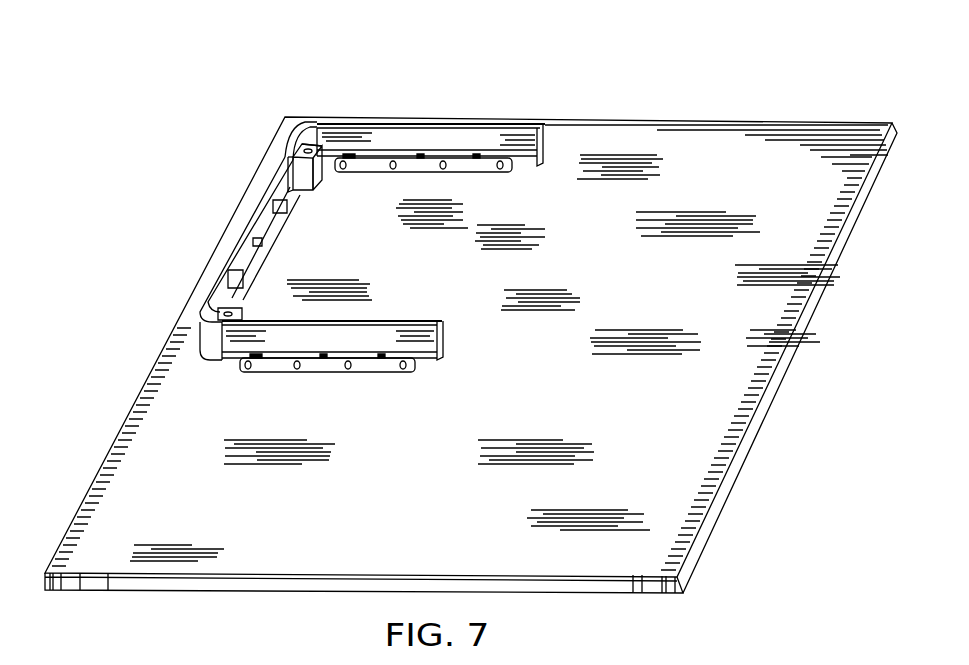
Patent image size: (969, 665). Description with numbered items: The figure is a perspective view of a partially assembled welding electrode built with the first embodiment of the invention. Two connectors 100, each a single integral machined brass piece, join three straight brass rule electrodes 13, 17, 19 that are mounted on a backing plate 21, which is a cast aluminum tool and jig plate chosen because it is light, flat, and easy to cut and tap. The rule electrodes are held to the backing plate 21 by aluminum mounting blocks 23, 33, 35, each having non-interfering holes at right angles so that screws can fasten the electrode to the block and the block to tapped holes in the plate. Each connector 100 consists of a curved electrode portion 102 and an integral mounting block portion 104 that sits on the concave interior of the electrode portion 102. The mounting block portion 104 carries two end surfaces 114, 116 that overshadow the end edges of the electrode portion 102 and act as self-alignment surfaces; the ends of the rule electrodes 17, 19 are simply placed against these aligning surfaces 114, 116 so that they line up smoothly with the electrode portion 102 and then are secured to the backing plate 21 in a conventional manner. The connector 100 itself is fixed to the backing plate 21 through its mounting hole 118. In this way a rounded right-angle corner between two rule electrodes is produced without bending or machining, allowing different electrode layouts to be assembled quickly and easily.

The rule electrode 13 is at (374, 336).
The rule electrode 17 is at (481, 140).
The rule electrode 19 is at (278, 215).
The backing plate 21 is at (436, 536).
The mounting block 23 is at (372, 368).
The mounting block 33 is at (488, 168).
The mounting block 35 is at (284, 248).
The connector 100 is at (305, 128).
The electrode portion 102 is at (322, 142).
The mounting block portion 104 is at (320, 166).
The end surface 114 is at (290, 162).
The end surface 116 is at (352, 146).
The mounting hole 118 is at (311, 147).